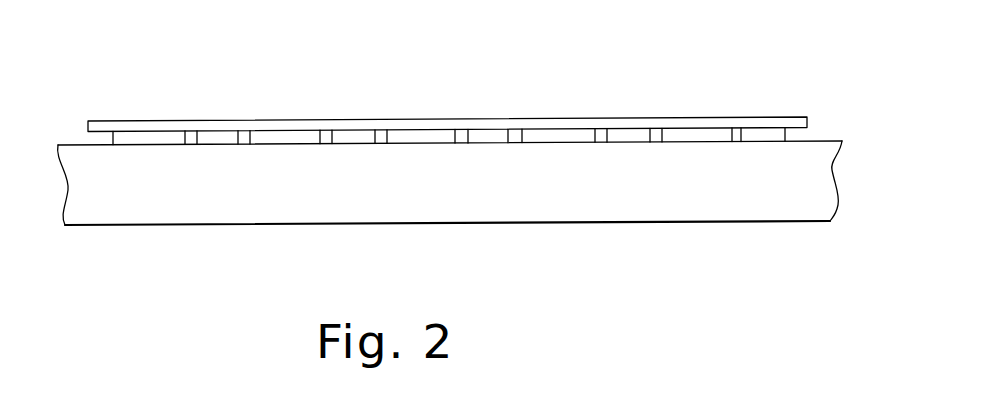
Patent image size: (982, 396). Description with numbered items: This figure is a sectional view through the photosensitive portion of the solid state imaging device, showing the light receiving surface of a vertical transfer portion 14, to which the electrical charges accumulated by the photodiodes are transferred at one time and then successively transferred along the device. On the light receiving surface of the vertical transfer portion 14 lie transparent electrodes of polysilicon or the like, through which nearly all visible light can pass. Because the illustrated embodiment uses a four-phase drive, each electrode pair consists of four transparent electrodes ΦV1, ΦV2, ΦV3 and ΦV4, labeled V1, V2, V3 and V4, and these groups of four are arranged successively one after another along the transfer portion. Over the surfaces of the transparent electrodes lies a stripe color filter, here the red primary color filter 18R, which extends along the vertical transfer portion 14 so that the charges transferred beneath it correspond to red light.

The vertical transfer portion 14 is at (413, 204).
The red primary color filter 18R is at (797, 119).
The transparent electrode Φ V1 is at (288, 140).
The transparent electrode Φ V2 is at (357, 139).
The transparent electrode Φ V3 is at (155, 140).
The transparent electrode Φ V4 is at (218, 140).